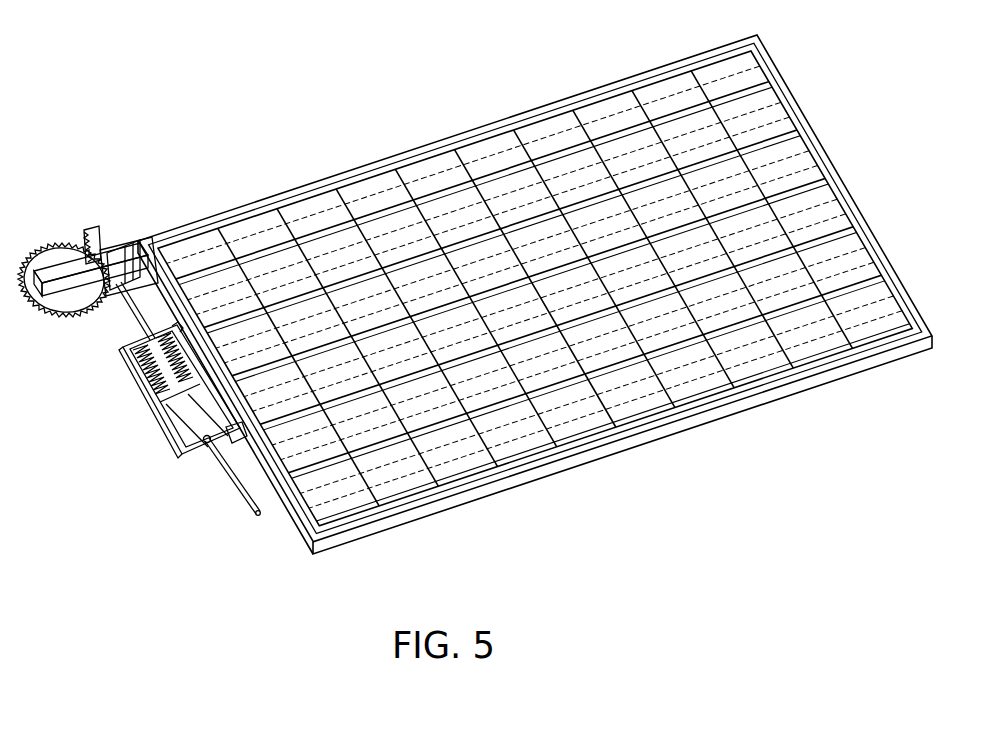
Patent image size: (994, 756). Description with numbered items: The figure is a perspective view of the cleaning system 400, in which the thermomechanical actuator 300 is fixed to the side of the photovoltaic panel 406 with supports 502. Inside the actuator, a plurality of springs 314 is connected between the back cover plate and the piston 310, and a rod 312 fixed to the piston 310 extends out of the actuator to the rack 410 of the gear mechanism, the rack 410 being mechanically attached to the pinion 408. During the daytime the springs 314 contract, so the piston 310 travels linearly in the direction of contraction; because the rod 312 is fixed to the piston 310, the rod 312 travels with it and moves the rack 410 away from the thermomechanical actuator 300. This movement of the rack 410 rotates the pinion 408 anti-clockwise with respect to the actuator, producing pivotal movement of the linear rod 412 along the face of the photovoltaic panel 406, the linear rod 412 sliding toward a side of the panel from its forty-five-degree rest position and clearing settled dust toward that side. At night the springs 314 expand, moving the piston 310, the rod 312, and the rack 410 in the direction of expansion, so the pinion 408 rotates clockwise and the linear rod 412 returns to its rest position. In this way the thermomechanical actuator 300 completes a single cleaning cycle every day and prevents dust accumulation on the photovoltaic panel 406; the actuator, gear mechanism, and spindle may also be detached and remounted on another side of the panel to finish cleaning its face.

The cleaning system 400 is at (124, 40).
The photovoltaic panel 406 is at (770, 127).
The linear rod 412 is at (300, 188).
The pinion 408 is at (55, 248).
The rack 410 is at (93, 230).
The rod 312 is at (128, 314).
The plurality of springs 314 is at (130, 368).
The piston 310 is at (158, 408).
The thermomechanical actuator 300 is at (155, 445).
The supports 502 is at (232, 447).